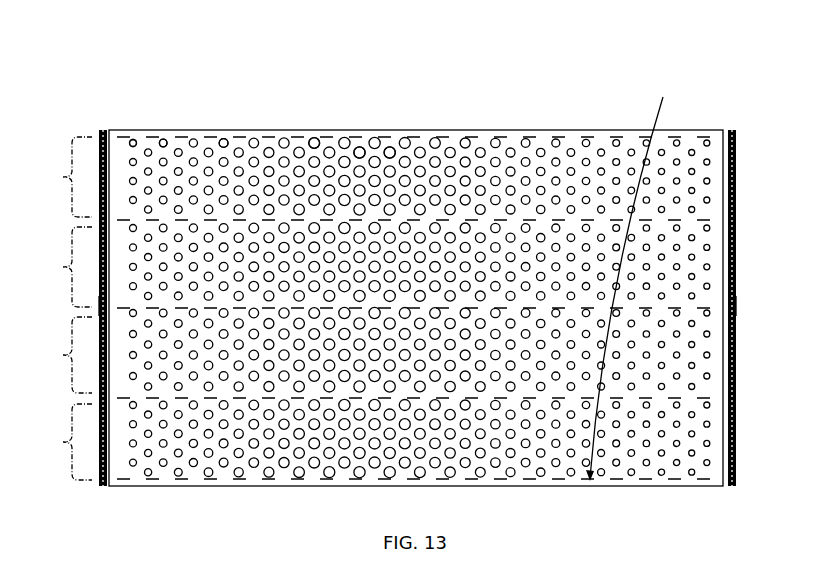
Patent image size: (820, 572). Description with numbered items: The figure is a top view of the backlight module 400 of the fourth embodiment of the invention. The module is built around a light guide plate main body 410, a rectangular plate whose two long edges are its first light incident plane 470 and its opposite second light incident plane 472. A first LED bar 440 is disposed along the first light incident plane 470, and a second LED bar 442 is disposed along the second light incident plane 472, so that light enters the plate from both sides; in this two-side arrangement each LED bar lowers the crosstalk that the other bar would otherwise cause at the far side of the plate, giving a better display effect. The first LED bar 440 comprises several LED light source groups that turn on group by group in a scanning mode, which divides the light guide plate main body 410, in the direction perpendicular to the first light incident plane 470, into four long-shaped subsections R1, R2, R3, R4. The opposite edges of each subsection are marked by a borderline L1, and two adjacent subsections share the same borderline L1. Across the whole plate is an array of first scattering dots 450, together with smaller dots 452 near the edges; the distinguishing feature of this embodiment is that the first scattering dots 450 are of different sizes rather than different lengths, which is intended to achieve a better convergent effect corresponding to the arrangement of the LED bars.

The backlight module 400 is at (62, 59).
The light guide plate main body 410 is at (483, 138).
The first LED bar 440 is at (97, 150).
The second LED bar 442 is at (736, 155).
The first scattering dots 450 is at (385, 148).
The small holes 452 is at (218, 139).
The first light incident plane 470 is at (97, 306).
The second light incident plane 472 is at (742, 305).
The borderline L1 is at (643, 285).
The subsection R1 is at (63, 177).
The subsection R2 is at (63, 267).
The subsection R3 is at (64, 355).
The subsection R4 is at (66, 442).